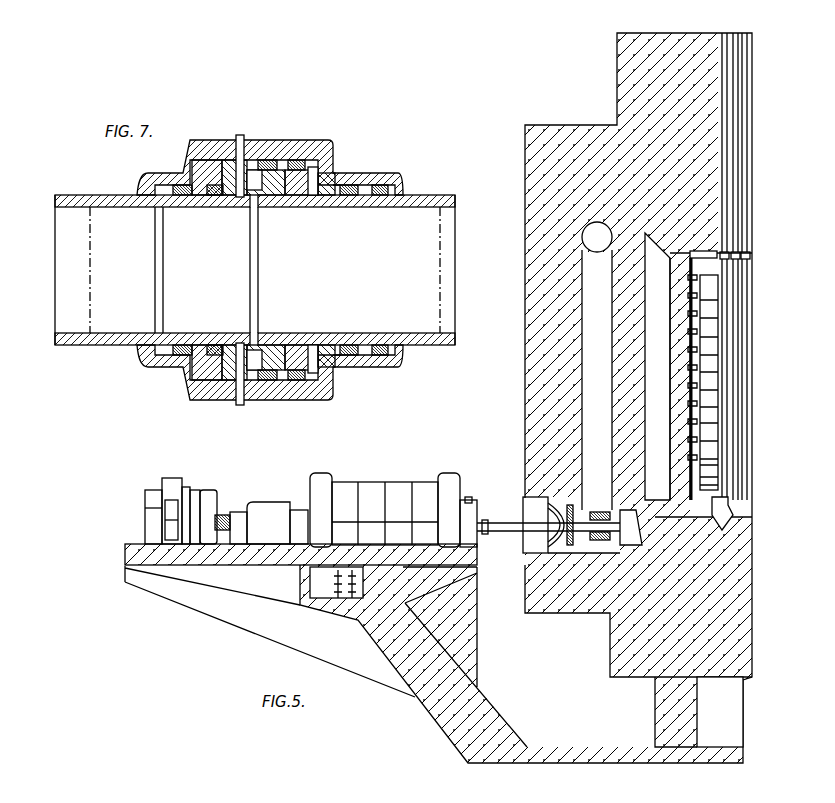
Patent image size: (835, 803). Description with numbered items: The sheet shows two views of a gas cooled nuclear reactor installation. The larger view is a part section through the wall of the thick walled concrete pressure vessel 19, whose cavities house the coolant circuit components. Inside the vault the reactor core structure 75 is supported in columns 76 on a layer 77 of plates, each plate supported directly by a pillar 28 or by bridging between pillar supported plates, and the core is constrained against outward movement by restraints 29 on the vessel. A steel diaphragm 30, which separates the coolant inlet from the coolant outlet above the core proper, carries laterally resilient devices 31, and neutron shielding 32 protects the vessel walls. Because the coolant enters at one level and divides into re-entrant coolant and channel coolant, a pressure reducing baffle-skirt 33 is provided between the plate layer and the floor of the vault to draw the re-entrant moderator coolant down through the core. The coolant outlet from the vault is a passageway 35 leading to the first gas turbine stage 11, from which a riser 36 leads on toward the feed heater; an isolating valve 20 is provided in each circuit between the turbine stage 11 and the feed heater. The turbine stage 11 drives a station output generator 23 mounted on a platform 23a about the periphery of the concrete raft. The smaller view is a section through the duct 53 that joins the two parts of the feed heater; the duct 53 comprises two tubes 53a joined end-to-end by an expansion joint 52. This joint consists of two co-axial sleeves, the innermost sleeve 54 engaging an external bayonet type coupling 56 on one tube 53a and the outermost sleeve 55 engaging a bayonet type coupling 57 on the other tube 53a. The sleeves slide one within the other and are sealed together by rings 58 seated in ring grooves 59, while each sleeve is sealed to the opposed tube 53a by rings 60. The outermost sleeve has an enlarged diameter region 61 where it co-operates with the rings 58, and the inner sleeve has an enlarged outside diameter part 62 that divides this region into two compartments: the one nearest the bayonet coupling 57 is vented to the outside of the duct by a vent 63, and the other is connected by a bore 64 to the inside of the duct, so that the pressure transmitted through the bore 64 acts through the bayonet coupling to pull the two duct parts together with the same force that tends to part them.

In FIG. 5, the first gas turbine stage 11 is at (570, 520).
In FIG. 5, the concrete pressure vessel 19 is at (680, 111).
In FIG. 5, the isolating valve 20 is at (590, 510).
In FIG. 5, the generator 23 is at (372, 483).
In FIG. 5, the platform 23a is at (140, 546).
In FIG. 5, the pillar 28 is at (697, 522).
In FIG. 5, the restraint 29 is at (690, 334).
In FIG. 5, the steel diaphragm 30 is at (693, 252).
In FIG. 5, the laterally resilient device 31 is at (718, 252).
In FIG. 5, the neutron shielding 32 is at (696, 356).
In FIG. 5, the pressure reducing baffle-skirt 33 is at (715, 515).
In FIG. 5, the passageway 35 is at (652, 300).
In FIG. 5, the riser 36 is at (583, 372).
In FIG. 5, the core structure 75 is at (699, 378).
In FIG. 5, the column 76 is at (725, 487).
In FIG. 5, the layer of plates 77 is at (728, 498).
In FIG. 7, the expansion joint 52 is at (305, 401).
In FIG. 7, the duct 53 is at (107, 333).
In FIG. 7, the tube 53a is at (388, 336).
In FIG. 7, the innermost sleeve 54 is at (205, 205).
In FIG. 7, the outermost sleeve 55 is at (285, 205).
In FIG. 7, the bayonet type coupling 56 is at (265, 207).
In FIG. 7, the bayonet type coupling 57 is at (239, 147).
In FIG. 7, the ring 58 is at (291, 159).
In FIG. 7, the ring groove 59 is at (243, 200).
In FIG. 7, the ring 60 is at (214, 197).
In FIG. 7, the enlarged diameter region 61 is at (320, 152).
In FIG. 7, the enlarged outside diameter part 62 is at (308, 206).
In FIG. 7, the vent 63 is at (270, 157).
In FIG. 7, the bore 64 is at (336, 201).